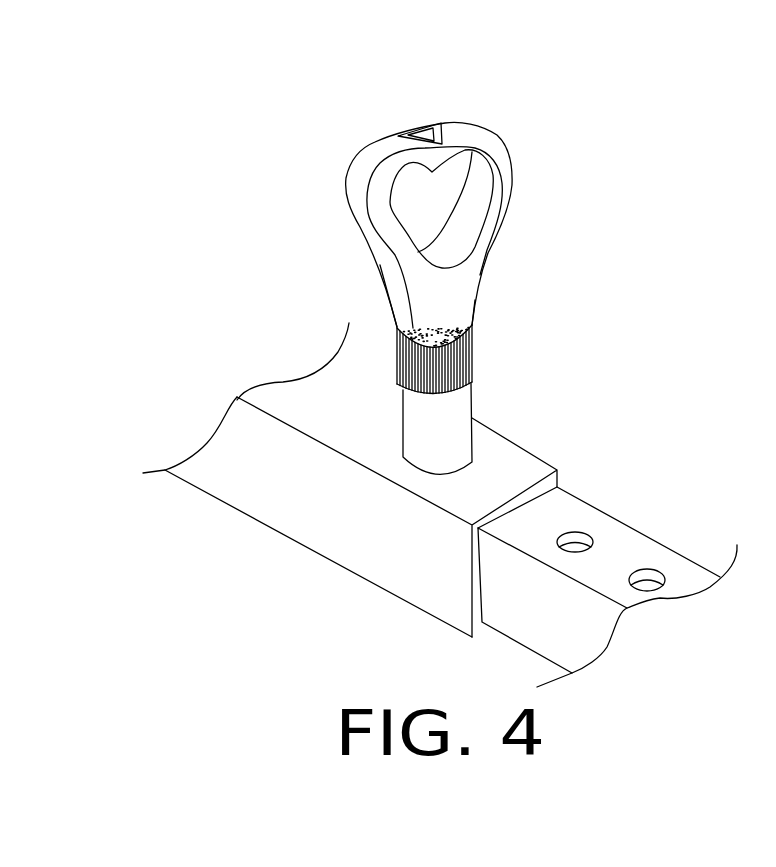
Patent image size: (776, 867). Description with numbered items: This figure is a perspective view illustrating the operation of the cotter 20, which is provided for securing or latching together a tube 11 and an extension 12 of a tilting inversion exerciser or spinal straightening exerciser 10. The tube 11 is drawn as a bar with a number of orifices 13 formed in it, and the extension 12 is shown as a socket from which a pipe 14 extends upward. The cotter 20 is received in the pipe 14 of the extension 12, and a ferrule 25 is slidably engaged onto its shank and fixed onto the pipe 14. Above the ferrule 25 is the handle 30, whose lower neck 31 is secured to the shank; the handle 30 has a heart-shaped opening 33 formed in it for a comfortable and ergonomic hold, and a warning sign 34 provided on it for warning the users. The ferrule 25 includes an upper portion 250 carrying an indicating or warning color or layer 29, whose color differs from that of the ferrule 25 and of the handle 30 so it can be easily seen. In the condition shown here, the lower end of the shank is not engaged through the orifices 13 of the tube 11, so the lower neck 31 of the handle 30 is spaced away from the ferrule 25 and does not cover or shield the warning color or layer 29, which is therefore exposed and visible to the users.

The tilting inversion exerciser 10 is at (301, 574).
The tube 11 is at (687, 555).
The extension 12 is at (495, 432).
The orifices 13 is at (574, 533).
The pipe 14 is at (452, 415).
The cotter 20 is at (480, 102).
The ferrule 25 is at (472, 350).
The upper portion 250 is at (473, 322).
The indicating or warning color or layer 29 is at (403, 367).
The handle 30 is at (490, 236).
The lower neck 31 is at (413, 313).
The heart-shaped opening 33 is at (408, 182).
The warning sign 34 is at (398, 134).